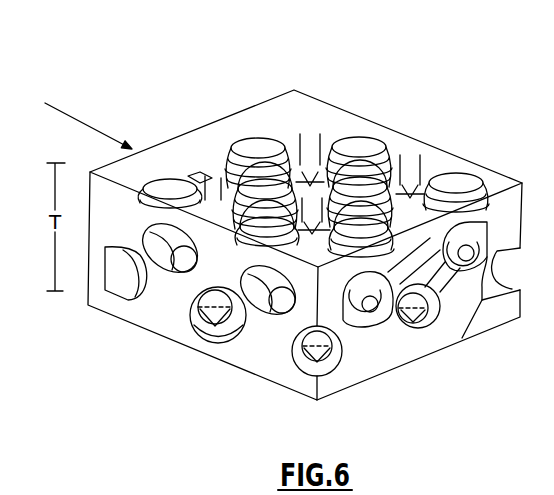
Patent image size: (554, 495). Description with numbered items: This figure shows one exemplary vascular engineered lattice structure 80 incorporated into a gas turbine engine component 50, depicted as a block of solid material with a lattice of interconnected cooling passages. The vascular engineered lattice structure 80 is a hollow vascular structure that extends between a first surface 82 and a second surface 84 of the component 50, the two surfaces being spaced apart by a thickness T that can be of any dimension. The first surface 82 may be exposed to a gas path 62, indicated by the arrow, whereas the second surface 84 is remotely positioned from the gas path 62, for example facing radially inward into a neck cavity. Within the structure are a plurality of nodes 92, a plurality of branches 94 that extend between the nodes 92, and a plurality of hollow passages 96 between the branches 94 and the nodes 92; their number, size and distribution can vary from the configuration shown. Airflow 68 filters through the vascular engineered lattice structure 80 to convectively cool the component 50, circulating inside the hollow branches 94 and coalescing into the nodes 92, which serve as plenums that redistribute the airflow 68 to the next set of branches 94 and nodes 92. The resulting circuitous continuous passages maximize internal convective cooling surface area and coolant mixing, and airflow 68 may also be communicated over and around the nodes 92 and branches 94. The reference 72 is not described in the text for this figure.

The component 50 is at (352, 62).
The gas path 62 is at (86, 123).
The first surface 82 is at (150, 162).
The second surface 84 is at (155, 336).
The body block 72 is at (270, 427).
The vascular engineered lattice structure 80 is at (240, 128).
The airflow 68 is at (357, 180).
The hollow passages 96 is at (315, 165).
The nodes 92 is at (362, 158).
The branches 94 is at (309, 153).